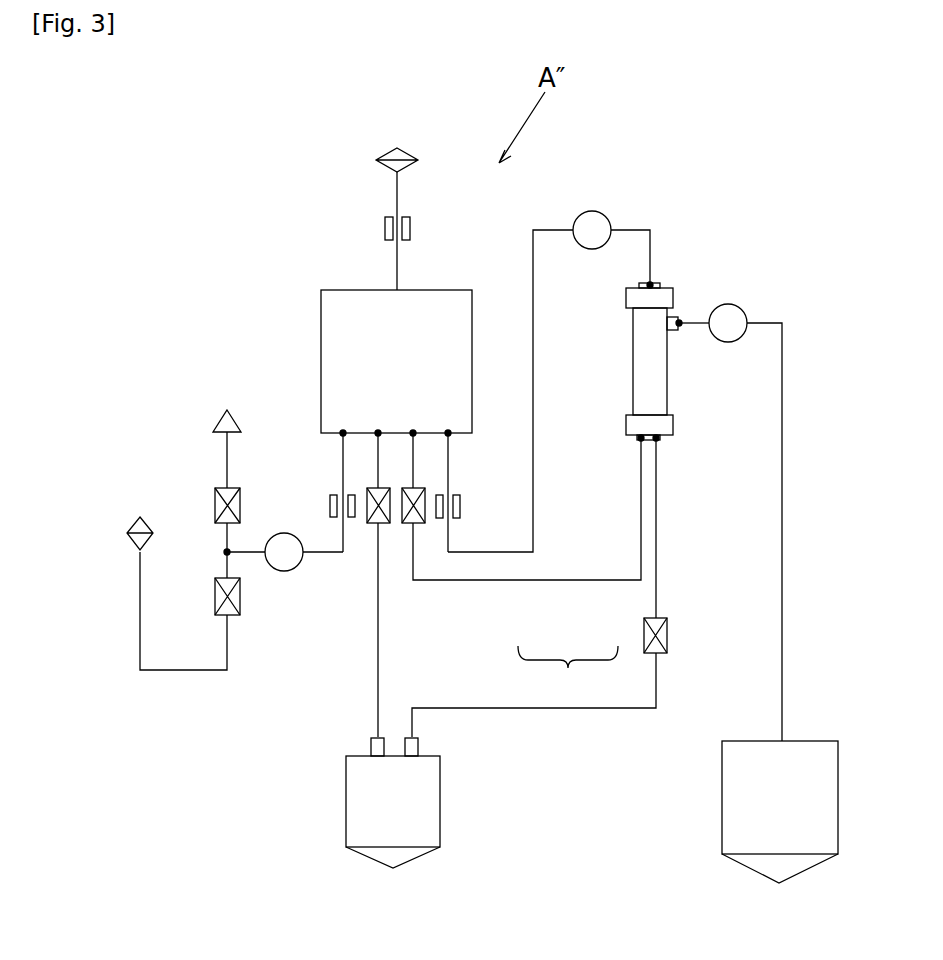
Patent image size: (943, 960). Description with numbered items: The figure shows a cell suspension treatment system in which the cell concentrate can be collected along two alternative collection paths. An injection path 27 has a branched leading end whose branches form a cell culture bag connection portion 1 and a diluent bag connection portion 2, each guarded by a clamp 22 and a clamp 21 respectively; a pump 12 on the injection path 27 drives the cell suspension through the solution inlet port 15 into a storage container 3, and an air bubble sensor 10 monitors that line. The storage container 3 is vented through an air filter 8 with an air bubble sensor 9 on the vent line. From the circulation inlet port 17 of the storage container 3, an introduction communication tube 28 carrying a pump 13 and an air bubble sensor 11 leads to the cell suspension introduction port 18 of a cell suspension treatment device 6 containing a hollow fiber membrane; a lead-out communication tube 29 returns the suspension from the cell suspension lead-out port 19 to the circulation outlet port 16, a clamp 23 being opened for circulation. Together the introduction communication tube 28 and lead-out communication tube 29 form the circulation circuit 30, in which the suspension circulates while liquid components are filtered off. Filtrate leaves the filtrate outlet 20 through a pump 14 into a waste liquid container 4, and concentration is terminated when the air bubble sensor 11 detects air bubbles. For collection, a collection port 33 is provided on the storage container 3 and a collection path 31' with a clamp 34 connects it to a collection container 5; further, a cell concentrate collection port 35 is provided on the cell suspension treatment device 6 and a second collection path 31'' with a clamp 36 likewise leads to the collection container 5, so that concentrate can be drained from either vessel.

The cell culture bag connection portion 1 is at (223, 415).
The diluent bag connection portion 2 is at (137, 525).
The storage container 3 is at (320, 330).
The waste liquid container 4 is at (726, 778).
The collection container 5 is at (345, 800).
The cell suspension treatment device 6 is at (632, 355).
The air filter 8 is at (385, 154).
The air bubble sensor 9 is at (383, 229).
The air bubble sensor 10 is at (328, 505).
The air bubble sensor 11 is at (461, 507).
The pump 12 is at (283, 572).
The pump 13 is at (592, 211).
The pump 14 is at (729, 304).
The solution inlet port 15 is at (343, 430).
The circulation outlet port 16 is at (413, 430).
The circulation inlet port 17 is at (448, 430).
The cell suspension introduction port 18 is at (652, 284).
The cell suspension lead-out port 19 is at (640, 441).
The filtrate outlet 20 is at (680, 326).
The clamp 21 is at (214, 608).
The clamp 22 is at (214, 496).
The clamp 23 is at (425, 488).
The injection path 27 is at (327, 553).
The introduction communication tube 28 is at (515, 554).
The lead-out communication tube 29 is at (610, 582).
The circulation circuit 30 is at (568, 675).
The collection path 31' is at (426, 630).
The collection path 31'' is at (534, 714).
The collection port 33 is at (378, 430).
The clamp 34 is at (367, 488).
The cell concentrate collection port 35 is at (658, 441).
The clamp 36 is at (668, 637).